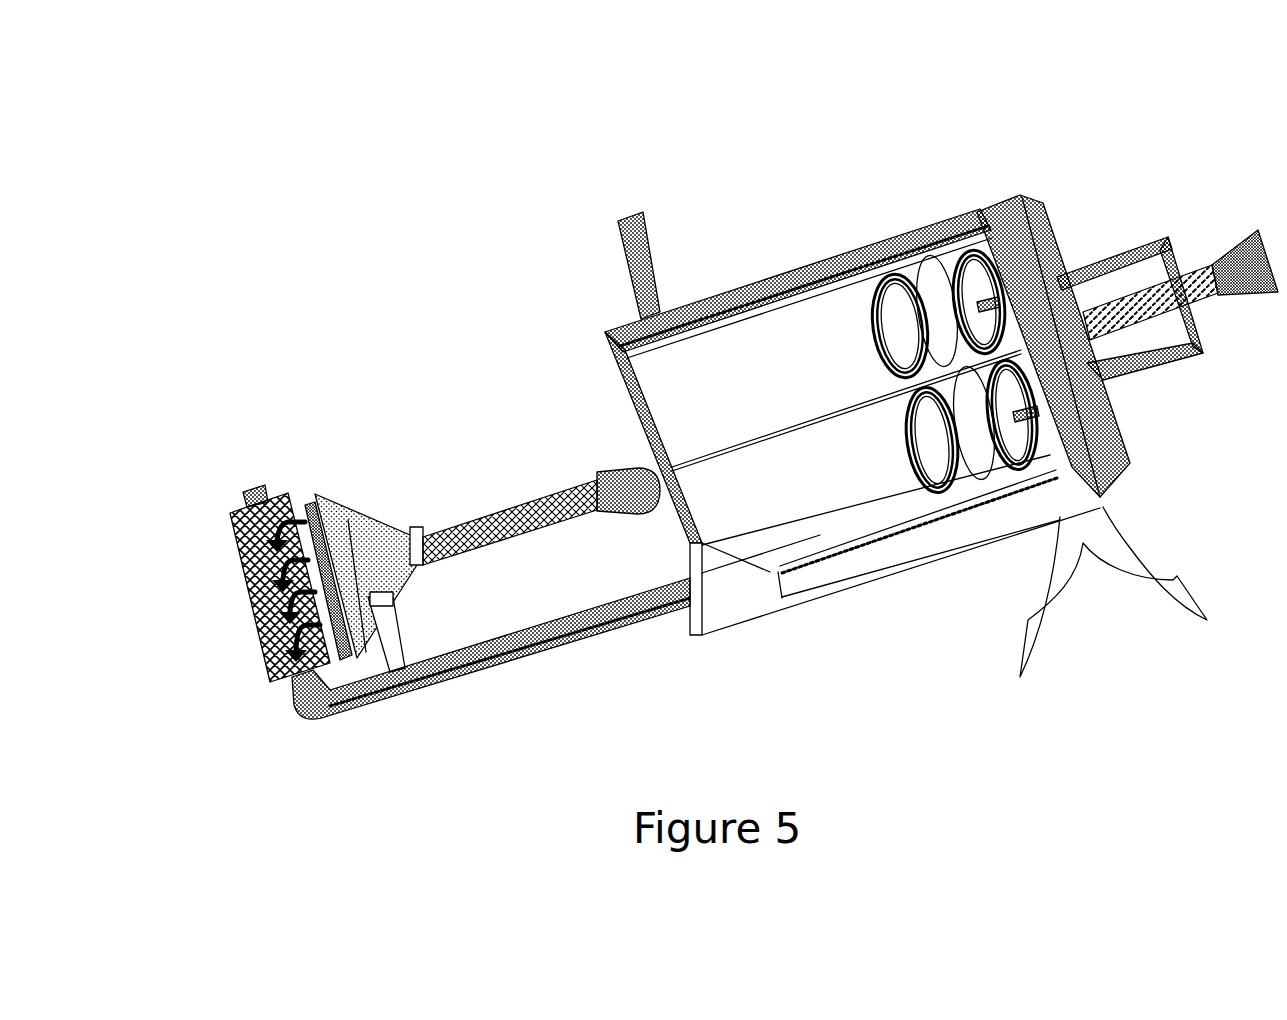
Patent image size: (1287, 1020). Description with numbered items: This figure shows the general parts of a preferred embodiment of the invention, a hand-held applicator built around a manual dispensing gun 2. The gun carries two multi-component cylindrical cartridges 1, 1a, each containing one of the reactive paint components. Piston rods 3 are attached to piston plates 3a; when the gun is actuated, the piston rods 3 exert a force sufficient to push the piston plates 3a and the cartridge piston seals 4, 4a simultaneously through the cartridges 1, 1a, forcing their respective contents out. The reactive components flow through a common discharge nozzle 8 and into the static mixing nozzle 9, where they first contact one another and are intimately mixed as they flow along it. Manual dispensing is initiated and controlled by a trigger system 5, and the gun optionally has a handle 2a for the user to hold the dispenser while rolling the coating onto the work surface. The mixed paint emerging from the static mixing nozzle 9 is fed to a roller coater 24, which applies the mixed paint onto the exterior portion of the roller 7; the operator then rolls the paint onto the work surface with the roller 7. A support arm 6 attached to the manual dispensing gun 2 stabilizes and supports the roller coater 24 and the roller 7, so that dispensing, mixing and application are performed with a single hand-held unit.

The multi-component cylindrical cartridge 1 is at (852, 391).
The multi-component cylindrical cartridge 1a is at (718, 502).
The manual dispensing gun 2 is at (1027, 228).
The handle 2a is at (627, 257).
The piston rod 3 is at (1145, 353).
The piston plate 3a is at (957, 257).
The cartridge piston seal 4 is at (926, 308).
The cartridge piston seal 4a is at (900, 437).
The trigger system 5 is at (1070, 637).
The support arm 6 is at (487, 657).
The roller 7 is at (247, 608).
The common discharge nozzle 8 is at (652, 508).
The static mixing nozzle 9 is at (487, 513).
The roller coater 24 is at (363, 513).